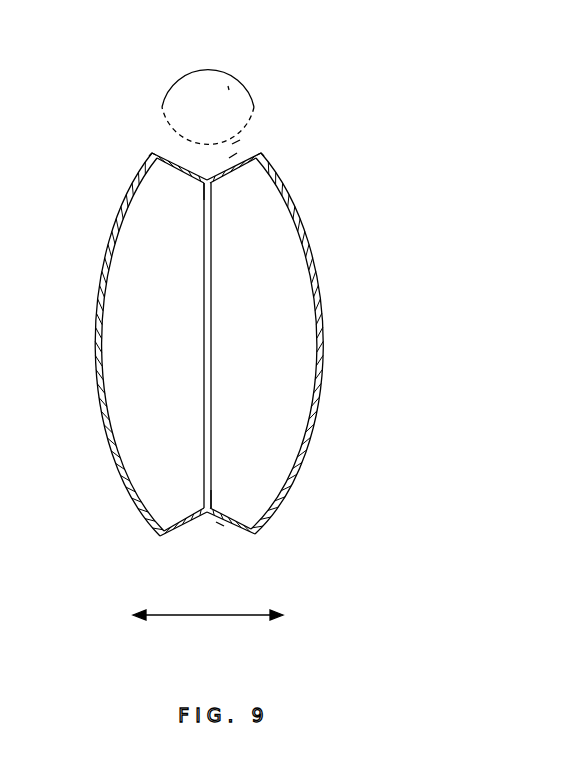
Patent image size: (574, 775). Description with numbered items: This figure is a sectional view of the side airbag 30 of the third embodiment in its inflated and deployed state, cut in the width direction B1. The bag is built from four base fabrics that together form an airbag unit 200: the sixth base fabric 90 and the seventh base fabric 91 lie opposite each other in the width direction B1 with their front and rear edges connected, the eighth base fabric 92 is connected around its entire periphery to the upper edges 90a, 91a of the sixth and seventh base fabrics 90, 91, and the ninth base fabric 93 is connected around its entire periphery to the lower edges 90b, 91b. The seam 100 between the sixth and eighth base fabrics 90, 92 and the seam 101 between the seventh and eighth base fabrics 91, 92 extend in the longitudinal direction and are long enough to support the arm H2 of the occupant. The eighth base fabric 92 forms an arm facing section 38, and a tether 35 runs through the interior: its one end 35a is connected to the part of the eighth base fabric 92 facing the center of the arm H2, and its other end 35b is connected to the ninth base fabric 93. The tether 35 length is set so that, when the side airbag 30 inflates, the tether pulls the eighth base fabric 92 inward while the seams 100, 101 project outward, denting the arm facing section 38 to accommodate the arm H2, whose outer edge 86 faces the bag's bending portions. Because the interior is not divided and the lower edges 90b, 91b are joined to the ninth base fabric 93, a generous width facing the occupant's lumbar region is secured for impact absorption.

The side airbag 30 is at (343, 240).
The airbag unit 200 is at (323, 326).
The tether 35 is at (212, 321).
The one end of the tether 35a is at (204, 182).
The other end of the tether 35b is at (210, 503).
The arm facing section 38 is at (236, 143).
The outer edge of the arm 86 is at (163, 105).
The sixth base fabric 90 is at (323, 368).
The upper edge of the sixth base fabric 90a is at (262, 152).
The lower edge of the sixth base fabric 90b is at (254, 536).
The seventh base fabric 91 is at (99, 375).
The upper edge of the seventh base fabric 91a is at (151, 153).
The lower edge of the seventh base fabric 91b is at (161, 538).
The eighth base fabric 92 is at (233, 157).
The ninth base fabric 93 is at (221, 528).
The seam between the sixth and eighth base fabrics 100 is at (263, 153).
The seam between the seventh and eighth base fabrics 101 is at (152, 151).
The arm H2 is at (228, 88).
The width direction B1 is at (207, 617).